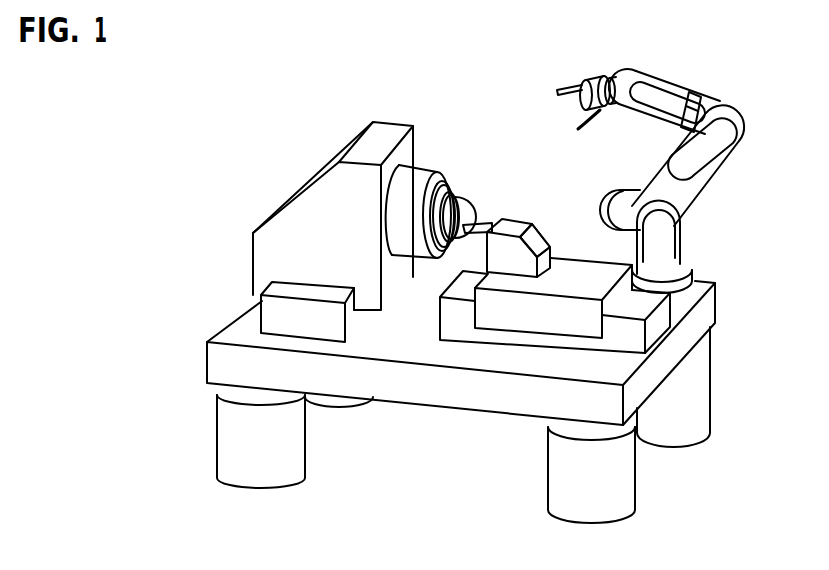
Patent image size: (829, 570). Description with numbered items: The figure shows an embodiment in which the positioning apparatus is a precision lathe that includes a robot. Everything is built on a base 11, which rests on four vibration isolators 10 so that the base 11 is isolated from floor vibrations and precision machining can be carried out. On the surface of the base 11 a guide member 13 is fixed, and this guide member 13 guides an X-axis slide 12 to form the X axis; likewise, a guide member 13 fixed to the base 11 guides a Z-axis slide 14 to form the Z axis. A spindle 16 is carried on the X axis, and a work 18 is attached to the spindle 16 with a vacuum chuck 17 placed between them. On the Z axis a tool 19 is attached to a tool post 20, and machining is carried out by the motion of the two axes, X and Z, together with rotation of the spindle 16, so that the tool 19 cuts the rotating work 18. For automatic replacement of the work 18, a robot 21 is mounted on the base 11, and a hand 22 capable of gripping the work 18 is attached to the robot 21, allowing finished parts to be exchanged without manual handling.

The vibration isolator 10 is at (623, 489).
The base 11 is at (716, 316).
The X-axis slide 12 is at (253, 258).
The guide member 13 is at (262, 308).
The Z-axis slide 14 is at (527, 322).
The spindle 16 is at (403, 255).
The vacuum chuck 17 is at (458, 193).
The work 18 is at (468, 221).
The tool 19 is at (489, 226).
The tool post 20 is at (538, 243).
The robot 21 is at (713, 160).
The hand 22 is at (568, 86).